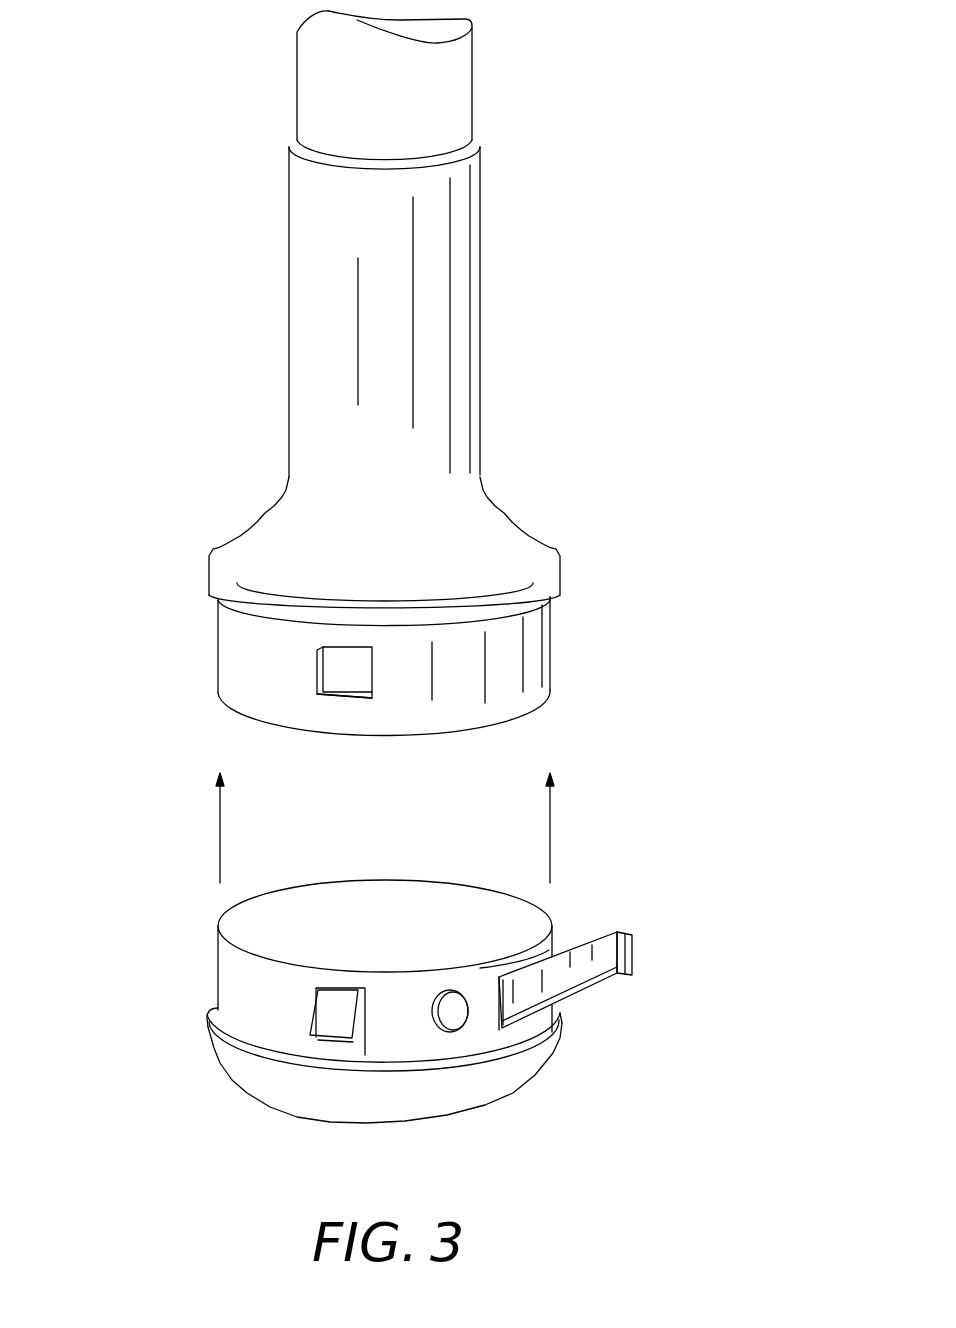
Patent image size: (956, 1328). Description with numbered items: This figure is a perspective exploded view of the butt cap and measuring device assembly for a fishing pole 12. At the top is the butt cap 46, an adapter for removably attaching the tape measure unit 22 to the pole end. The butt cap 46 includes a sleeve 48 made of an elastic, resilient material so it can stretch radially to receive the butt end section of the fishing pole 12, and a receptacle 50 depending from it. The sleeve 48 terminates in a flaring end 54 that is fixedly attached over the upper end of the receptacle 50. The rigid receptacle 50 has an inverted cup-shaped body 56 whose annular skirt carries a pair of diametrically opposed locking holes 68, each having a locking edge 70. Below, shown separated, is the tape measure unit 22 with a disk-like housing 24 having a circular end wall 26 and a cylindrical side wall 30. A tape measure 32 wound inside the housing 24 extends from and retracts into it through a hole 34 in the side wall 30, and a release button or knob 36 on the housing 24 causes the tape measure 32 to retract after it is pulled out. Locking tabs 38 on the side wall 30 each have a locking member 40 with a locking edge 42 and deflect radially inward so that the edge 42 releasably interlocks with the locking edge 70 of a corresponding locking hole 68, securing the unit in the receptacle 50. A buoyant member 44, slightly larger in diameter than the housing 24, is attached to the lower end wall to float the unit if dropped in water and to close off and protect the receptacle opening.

The fishing pole 12 is at (490, 78).
The sleeve 48 is at (480, 287).
The butt cap 46 is at (417, 455).
The flaring end 54 is at (490, 510).
The receptacle 50 is at (391, 666).
The inverted cup-shaped body 56 is at (270, 662).
The locking holes 68 is at (347, 665).
The locking edge 70 is at (335, 698).
The tape measure unit 22 is at (355, 1001).
The housing 24 is at (330, 930).
The end wall 26 is at (443, 898).
The hole 34 is at (513, 1000).
The tape measure 32 is at (583, 983).
The locking member 40 is at (315, 1042).
The locking edge 42 is at (318, 1042).
The locking tabs 38 is at (335, 1047).
The release button or knob 36 is at (452, 1017).
The side wall 30 is at (242, 1017).
The buoyant member 44 is at (408, 1107).